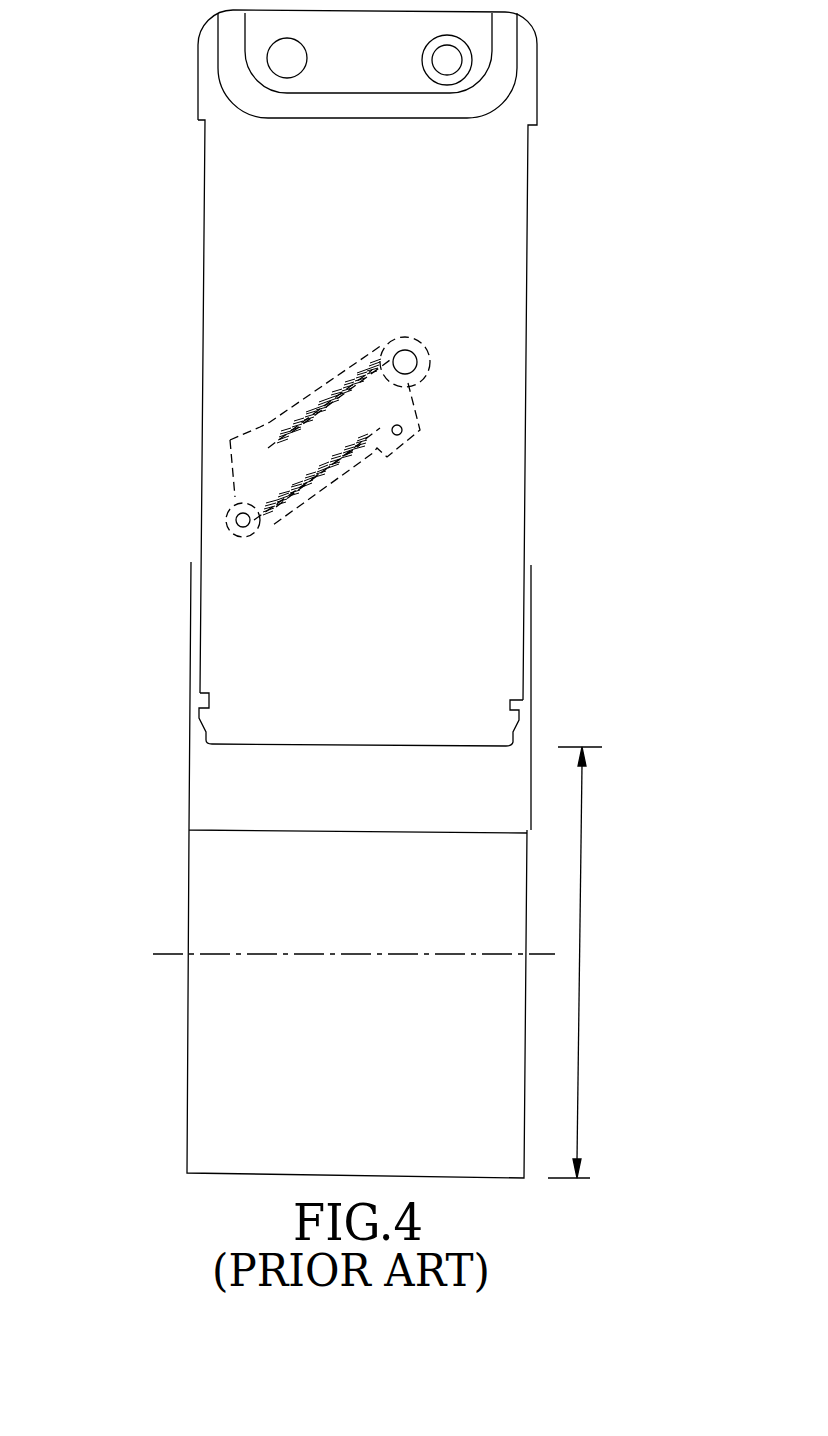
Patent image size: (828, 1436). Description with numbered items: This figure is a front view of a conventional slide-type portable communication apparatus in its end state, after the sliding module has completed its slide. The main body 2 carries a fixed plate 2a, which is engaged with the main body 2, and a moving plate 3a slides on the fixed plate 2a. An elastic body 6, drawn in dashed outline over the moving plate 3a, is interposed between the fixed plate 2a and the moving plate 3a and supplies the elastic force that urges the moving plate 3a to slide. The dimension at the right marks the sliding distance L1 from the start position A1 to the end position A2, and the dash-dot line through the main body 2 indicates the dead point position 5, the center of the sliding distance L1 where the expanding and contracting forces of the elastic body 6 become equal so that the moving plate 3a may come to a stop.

The main body 2 is at (217, 1073).
The fixed plate 2a is at (207, 770).
The moving plate 3a is at (510, 213).
The dead point position 5 is at (170, 952).
The elastic body 6 is at (305, 403).
The start position A1 is at (590, 1178).
The end position A2 is at (602, 747).
The sliding distance L1 is at (580, 942).